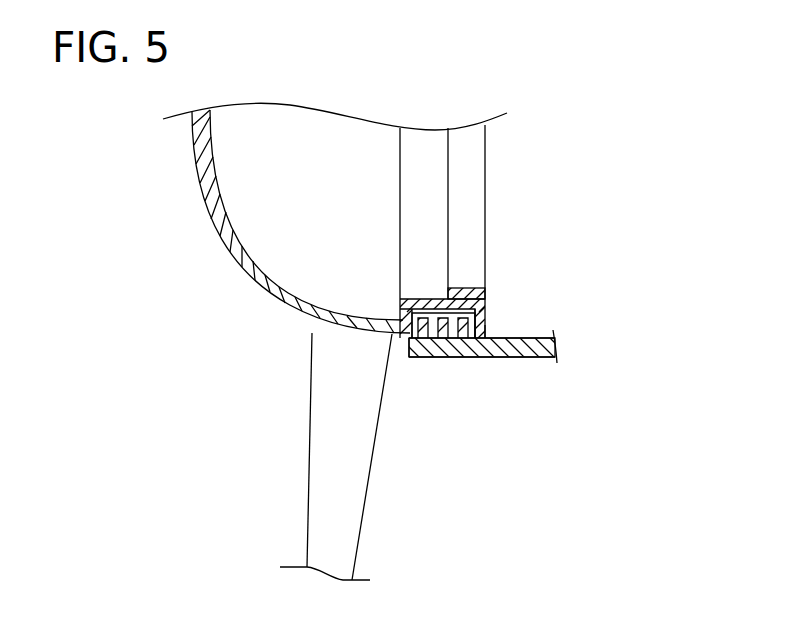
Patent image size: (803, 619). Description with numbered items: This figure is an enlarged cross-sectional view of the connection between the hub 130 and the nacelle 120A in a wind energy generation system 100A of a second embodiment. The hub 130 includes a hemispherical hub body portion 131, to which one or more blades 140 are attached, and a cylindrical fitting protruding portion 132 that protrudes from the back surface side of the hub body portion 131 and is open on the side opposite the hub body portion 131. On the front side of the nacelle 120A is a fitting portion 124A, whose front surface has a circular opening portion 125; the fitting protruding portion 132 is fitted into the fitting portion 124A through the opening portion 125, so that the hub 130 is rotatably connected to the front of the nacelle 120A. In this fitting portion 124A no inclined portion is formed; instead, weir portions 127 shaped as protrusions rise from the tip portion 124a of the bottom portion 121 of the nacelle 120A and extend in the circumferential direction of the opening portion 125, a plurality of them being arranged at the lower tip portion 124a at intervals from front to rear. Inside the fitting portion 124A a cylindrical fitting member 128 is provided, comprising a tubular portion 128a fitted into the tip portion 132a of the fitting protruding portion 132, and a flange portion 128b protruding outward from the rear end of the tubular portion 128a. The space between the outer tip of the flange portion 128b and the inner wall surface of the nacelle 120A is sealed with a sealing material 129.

The wind energy generation system 100A is at (498, 83).
The nacelle 120A is at (540, 337).
The bottom portion 121 is at (413, 356).
The tip portion 124a is at (410, 339).
The fitting portion 124A is at (470, 362).
The opening portion 125 is at (392, 335).
The weir portions 127 is at (462, 338).
The fitting member 128 is at (465, 305).
The tubular portion 128a is at (460, 288).
The flange portion 128b is at (487, 303).
The sealing material 129 is at (487, 332).
The hub 130 is at (254, 221).
The hub body portion 131 is at (198, 172).
The fitting protruding portion 132 is at (432, 143).
The tip portion 132a is at (490, 261).
The blades 140 is at (308, 423).